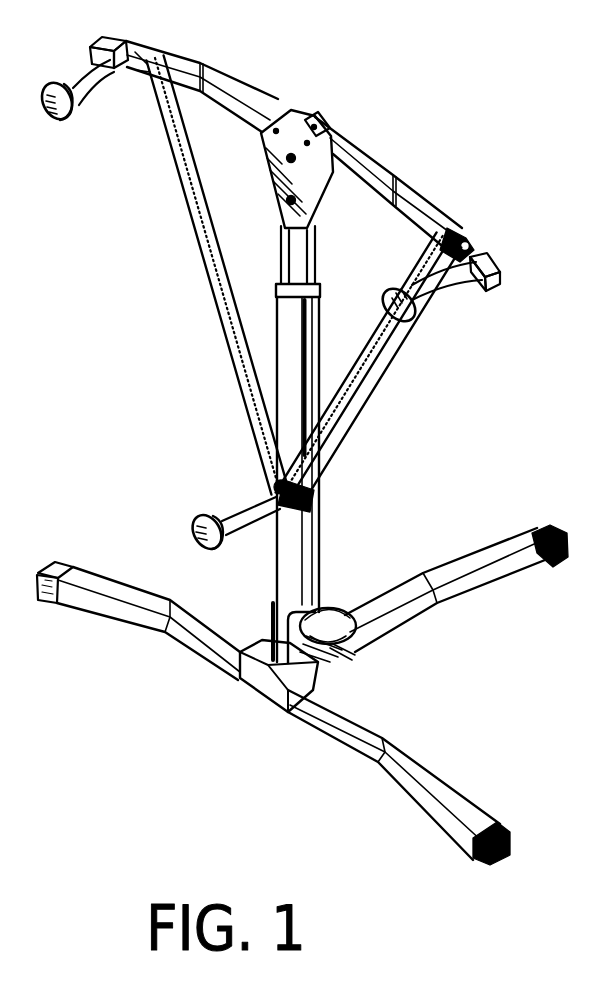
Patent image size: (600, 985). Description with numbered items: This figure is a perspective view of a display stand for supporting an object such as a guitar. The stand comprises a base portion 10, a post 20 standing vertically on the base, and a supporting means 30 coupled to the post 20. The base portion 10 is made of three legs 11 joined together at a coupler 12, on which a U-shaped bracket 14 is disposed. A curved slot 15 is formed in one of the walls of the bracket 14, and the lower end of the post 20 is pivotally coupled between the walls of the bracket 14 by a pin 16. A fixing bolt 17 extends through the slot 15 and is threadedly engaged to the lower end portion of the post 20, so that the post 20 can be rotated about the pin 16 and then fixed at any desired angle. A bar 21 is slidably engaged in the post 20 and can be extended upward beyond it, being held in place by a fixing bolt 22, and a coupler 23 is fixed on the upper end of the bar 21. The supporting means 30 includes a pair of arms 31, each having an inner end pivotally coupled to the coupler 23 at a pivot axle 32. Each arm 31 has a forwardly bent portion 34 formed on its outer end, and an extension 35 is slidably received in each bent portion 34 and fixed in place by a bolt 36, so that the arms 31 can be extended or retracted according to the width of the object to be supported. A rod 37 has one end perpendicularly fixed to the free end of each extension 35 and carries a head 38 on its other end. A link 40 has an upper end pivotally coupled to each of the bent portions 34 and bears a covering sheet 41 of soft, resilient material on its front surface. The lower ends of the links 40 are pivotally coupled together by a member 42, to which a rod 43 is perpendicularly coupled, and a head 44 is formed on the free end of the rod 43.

The base portion 10 is at (295, 735).
The legs 11 is at (347, 743).
The coupler 12 is at (257, 697).
The U-shaped bracket 14 is at (327, 647).
The curved slot 15 is at (343, 610).
The pin 16 is at (333, 670).
The fixing bolt 17 is at (353, 657).
The post 20 is at (310, 345).
The bar 21 is at (317, 248).
The fixing bolt 22 is at (320, 292).
The coupler 23 is at (275, 180).
The supporting means 30 is at (418, 108).
The arms 31 is at (233, 83).
The pivot axle 32 is at (313, 137).
The forwardly bent portion 34 is at (167, 58).
The extension 35 is at (499, 273).
The bolt 36 is at (470, 244).
The rod 37 is at (463, 293).
The head 38 is at (403, 330).
The link 40 is at (357, 408).
The covering sheet 41 is at (368, 377).
The member 42 is at (315, 522).
The rod 43 is at (257, 517).
The head 44 is at (195, 520).